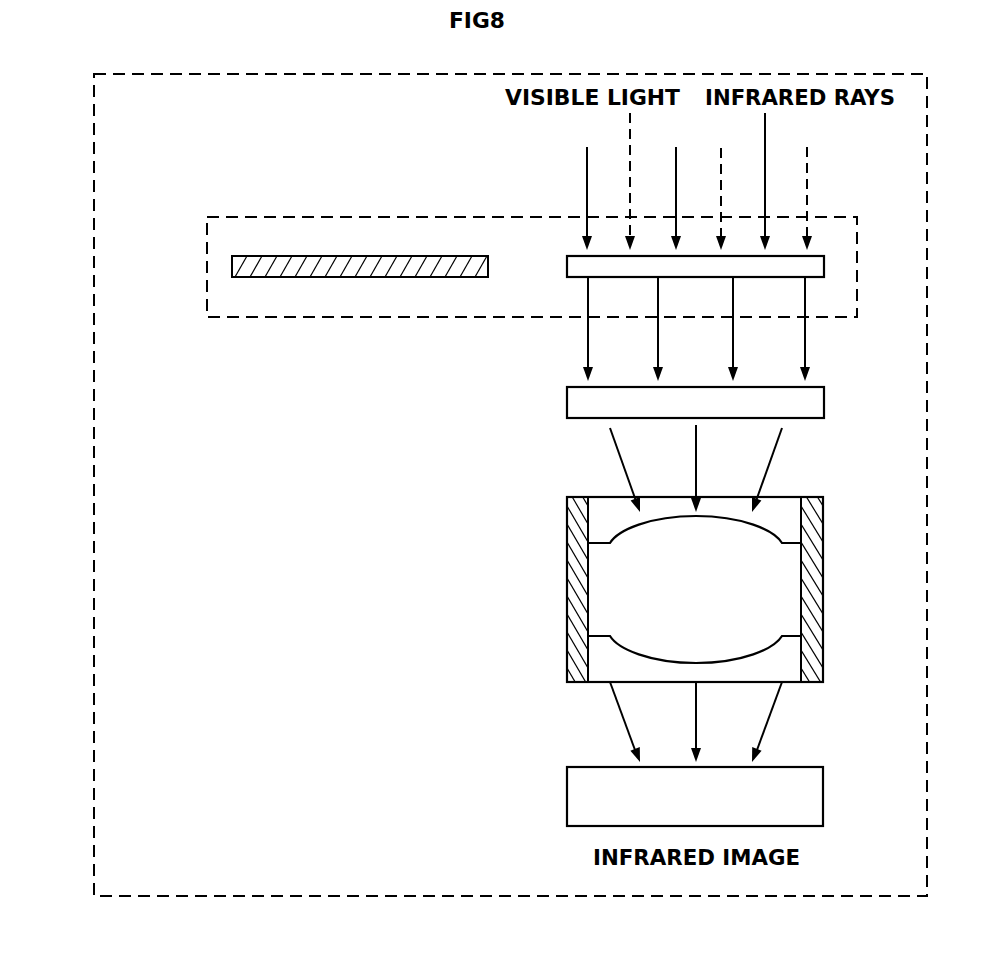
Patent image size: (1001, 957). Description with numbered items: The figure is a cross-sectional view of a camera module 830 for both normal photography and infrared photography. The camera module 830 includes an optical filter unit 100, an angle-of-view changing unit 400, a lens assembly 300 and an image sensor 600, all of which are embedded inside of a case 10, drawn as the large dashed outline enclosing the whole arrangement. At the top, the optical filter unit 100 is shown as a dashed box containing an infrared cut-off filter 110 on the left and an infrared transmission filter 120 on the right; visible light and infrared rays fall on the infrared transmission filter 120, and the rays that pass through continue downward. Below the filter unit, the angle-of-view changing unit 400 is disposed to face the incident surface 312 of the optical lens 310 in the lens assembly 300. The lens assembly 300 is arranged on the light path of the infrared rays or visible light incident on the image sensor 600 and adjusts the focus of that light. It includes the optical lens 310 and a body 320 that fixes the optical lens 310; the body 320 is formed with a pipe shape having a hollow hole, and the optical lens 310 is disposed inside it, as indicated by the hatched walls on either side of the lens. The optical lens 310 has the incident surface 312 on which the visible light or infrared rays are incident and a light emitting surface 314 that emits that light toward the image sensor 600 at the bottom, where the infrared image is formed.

The case 10 is at (94, 322).
The camera module 830 is at (252, 172).
The optical filter unit 100 is at (395, 217).
The infrared cut-off filter 110 is at (232, 266).
The infrared transmission filter 120 is at (824, 277).
The angle-of-view changing unit 400 is at (560, 403).
The lens assembly 300 is at (682, 582).
The optical lens 310 is at (748, 573).
The incident surface 312 is at (762, 530).
The light emitting surface 314 is at (762, 651).
The body 320 is at (816, 612).
The image sensor 600 is at (560, 794).